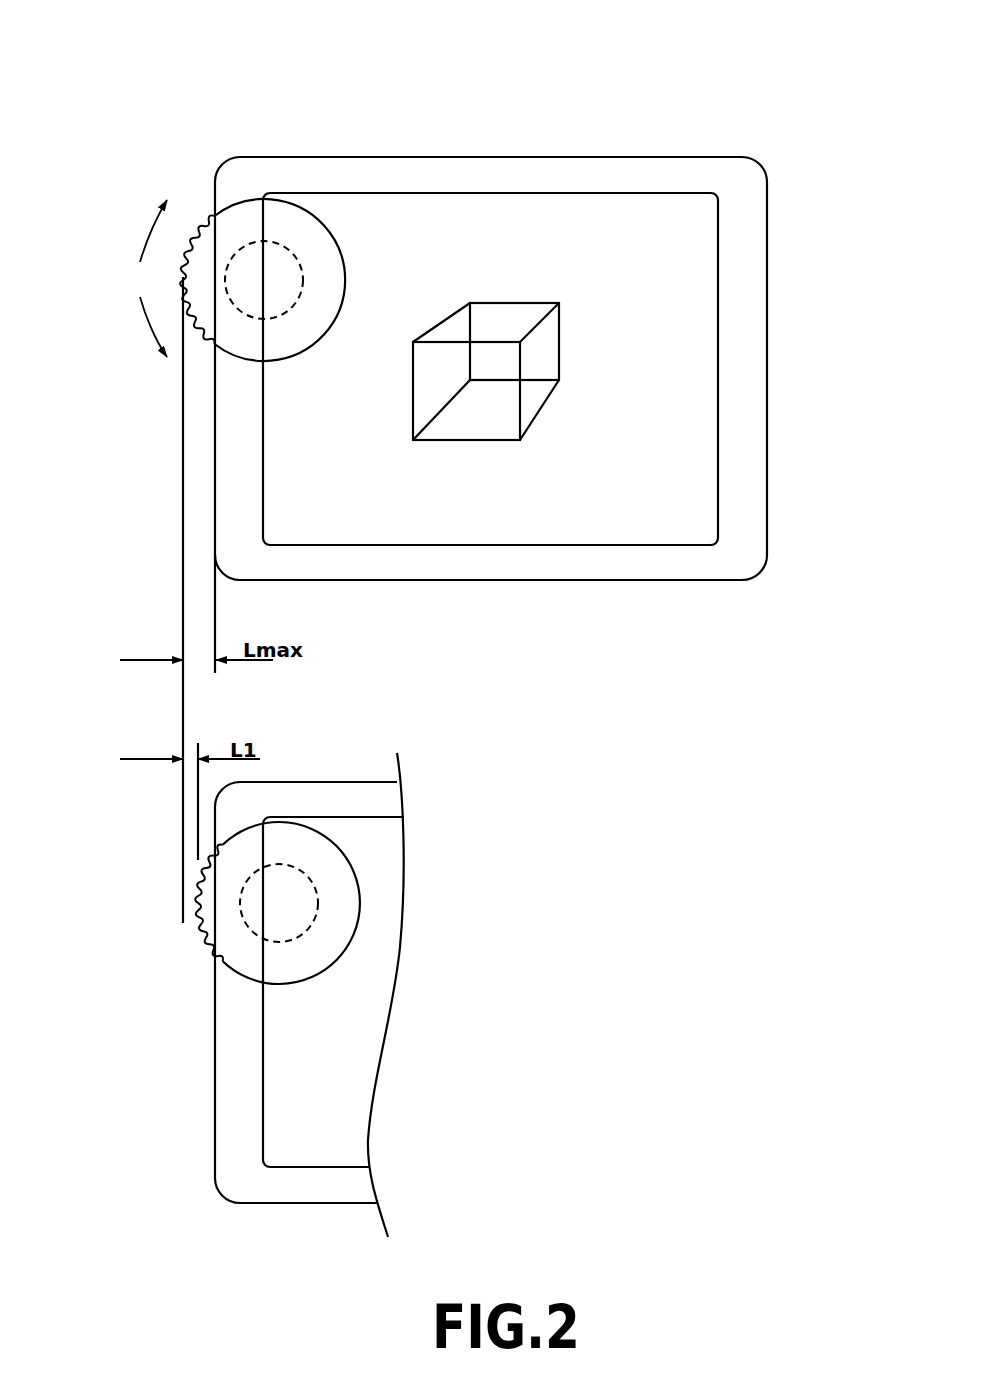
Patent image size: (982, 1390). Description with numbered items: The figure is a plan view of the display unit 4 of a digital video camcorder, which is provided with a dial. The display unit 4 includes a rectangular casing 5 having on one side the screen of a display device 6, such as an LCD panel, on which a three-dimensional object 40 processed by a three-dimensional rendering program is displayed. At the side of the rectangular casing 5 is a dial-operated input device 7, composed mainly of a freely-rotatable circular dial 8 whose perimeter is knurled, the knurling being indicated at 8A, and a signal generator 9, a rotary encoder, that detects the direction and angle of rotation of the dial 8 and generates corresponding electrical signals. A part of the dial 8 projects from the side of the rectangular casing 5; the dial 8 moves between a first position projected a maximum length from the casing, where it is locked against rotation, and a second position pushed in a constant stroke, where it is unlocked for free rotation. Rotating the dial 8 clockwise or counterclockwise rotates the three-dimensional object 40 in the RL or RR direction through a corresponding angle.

The display unit 4 is at (645, 118).
The rectangular casing 5 is at (762, 167).
The display device 6 is at (697, 279).
The dial-operated input device 7 is at (193, 207).
The dial 8 is at (293, 213).
The knurling 8A is at (183, 277).
The signal generator 9 is at (300, 263).
The three-dimensional object 40 is at (518, 300).